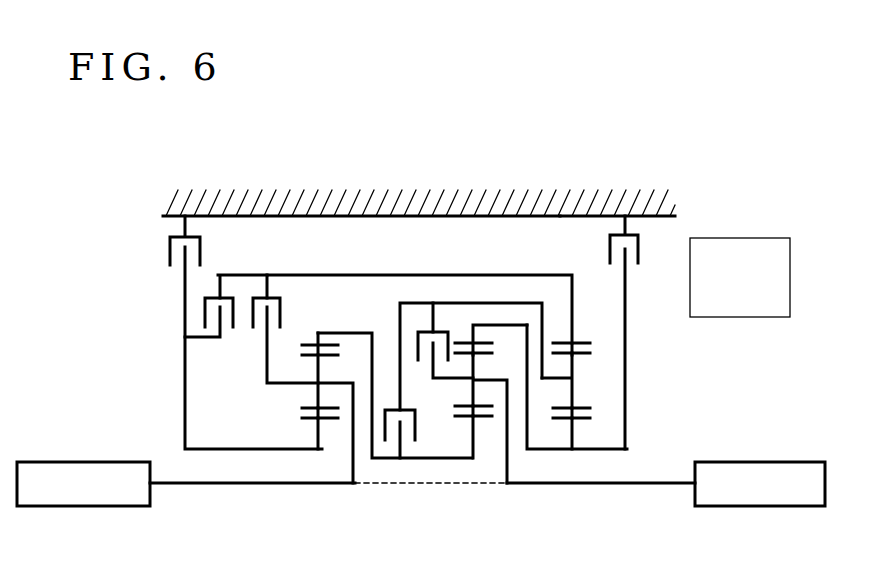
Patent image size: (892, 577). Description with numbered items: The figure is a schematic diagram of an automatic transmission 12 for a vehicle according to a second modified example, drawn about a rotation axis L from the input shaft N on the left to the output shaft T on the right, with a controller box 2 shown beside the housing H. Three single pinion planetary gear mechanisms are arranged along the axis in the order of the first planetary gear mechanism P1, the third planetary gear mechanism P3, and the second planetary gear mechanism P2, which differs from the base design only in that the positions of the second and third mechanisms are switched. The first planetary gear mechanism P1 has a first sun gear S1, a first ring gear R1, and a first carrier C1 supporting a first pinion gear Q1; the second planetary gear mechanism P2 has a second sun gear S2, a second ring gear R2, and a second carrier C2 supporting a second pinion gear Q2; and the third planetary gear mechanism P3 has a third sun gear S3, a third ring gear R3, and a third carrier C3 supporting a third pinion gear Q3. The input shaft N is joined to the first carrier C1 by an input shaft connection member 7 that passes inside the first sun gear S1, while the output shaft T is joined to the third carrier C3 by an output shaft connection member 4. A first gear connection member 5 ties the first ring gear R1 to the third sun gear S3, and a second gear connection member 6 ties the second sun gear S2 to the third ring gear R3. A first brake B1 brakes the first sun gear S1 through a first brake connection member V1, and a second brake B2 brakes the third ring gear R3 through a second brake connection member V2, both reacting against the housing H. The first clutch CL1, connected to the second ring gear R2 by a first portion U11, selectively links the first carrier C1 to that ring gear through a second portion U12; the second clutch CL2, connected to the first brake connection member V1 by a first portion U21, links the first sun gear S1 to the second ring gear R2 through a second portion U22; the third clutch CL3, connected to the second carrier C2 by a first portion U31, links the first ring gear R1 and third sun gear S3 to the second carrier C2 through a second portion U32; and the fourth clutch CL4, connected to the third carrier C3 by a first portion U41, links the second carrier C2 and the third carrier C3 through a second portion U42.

The housing H is at (398, 203).
The automatic transmission 12 is at (576, 178).
The TM-ECU 2 is at (721, 238).
The first brake B1 is at (208, 251).
The second brake B2 is at (647, 257).
The first brake connection member V1 is at (183, 298).
The second brake connection member V2 is at (628, 285).
The first portion of first clutch connection member U11 is at (307, 275).
The second portion of first clutch connection member U12 is at (267, 373).
The first portion of second clutch connection member U21 is at (236, 275).
The second portion of second clutch connection member U22 is at (209, 340).
The first portion of third clutch connection member U31 is at (398, 338).
The second portion of third clutch connection member U32 is at (401, 449).
The first portion of fourth clutch connection member U41 is at (429, 323).
The second portion of fourth clutch connection member U42 is at (431, 362).
The first clutch CL1 is at (294, 318).
The second clutch CL2 is at (239, 332).
The third clutch CL3 is at (382, 445).
The fourth clutch CL4 is at (411, 337).
The first ring gear R1 is at (305, 345).
The second ring gear R2 is at (578, 342).
The third ring gear R3 is at (458, 342).
The first carrier C1 is at (313, 383).
The second carrier C2 is at (574, 376).
The third carrier C3 is at (479, 375).
The first pinion gear Q1 is at (316, 398).
The second pinion gear Q2 is at (574, 391).
The third pinion gear Q3 is at (470, 393).
The first sun gear S1 is at (316, 433).
The second sun gear S2 is at (574, 432).
The third sun gear S3 is at (470, 433).
The first planetary gear mechanism P1 is at (328, 430).
The second planetary gear mechanism P2 is at (556, 428).
The third planetary gear mechanism P3 is at (489, 425).
The first gear connection member 5 is at (372, 362).
The second gear connection member 6 is at (527, 450).
The input shaft connection member 7 is at (226, 486).
The output shaft connection member 4 is at (653, 481).
The rotation axis L is at (193, 487).
The input shaft N is at (100, 507).
The output shaft T is at (731, 507).